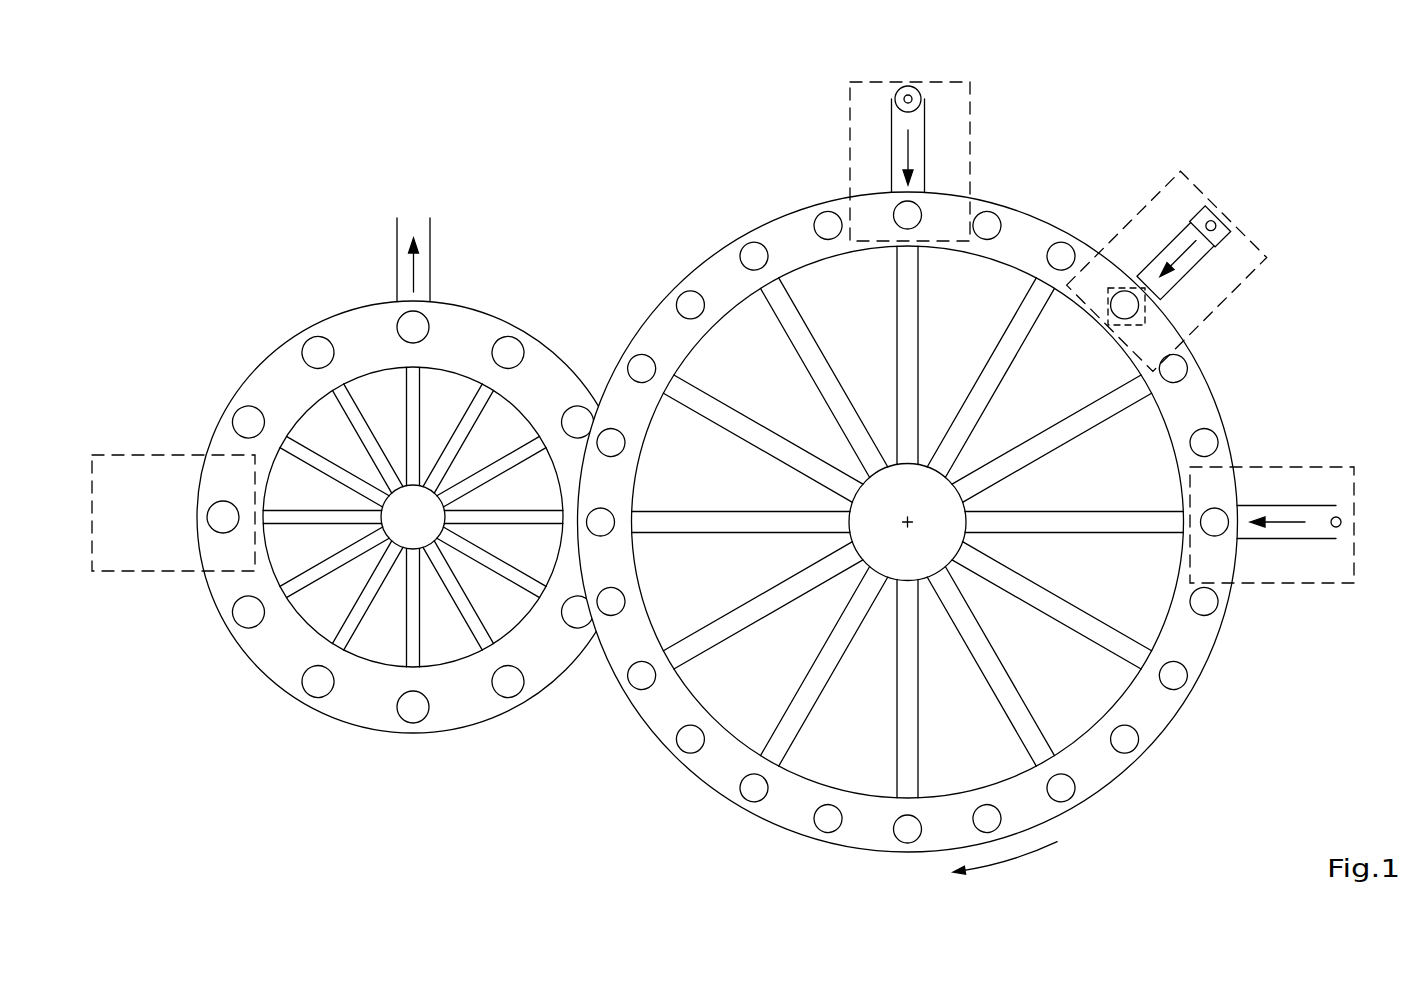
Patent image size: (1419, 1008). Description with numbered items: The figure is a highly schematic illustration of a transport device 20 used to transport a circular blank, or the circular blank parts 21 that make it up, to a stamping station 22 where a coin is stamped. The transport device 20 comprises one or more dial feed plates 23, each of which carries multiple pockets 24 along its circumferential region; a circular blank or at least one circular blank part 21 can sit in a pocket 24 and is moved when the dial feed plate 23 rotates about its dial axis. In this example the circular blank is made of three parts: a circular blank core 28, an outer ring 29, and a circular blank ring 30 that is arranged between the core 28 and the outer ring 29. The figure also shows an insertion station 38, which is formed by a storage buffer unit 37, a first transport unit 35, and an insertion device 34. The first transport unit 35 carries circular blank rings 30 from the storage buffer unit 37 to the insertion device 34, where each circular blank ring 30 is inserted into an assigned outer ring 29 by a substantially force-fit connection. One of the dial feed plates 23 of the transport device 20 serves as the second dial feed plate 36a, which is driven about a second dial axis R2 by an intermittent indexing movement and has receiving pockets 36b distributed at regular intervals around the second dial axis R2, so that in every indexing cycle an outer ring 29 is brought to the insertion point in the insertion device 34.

The transport device 20 is at (1252, 112).
The circular blank parts 21 is at (1134, 308).
The stamping station 22 is at (123, 453).
The dial feed plate 23 is at (297, 702).
The pockets 24 is at (510, 350).
The circular blank core 28 is at (1339, 517).
The outer ring 29 is at (918, 91).
The circular blank ring 30 is at (1197, 269).
The insertion device 34 is at (1160, 300).
The first transport unit 35 is at (1198, 262).
The second dial feed plate 36a is at (765, 817).
The receiving pockets 36b is at (1132, 738).
The storage buffer unit 37 is at (1227, 237).
The insertion station 38 is at (1138, 213).
The second dial axis R2 is at (908, 522).